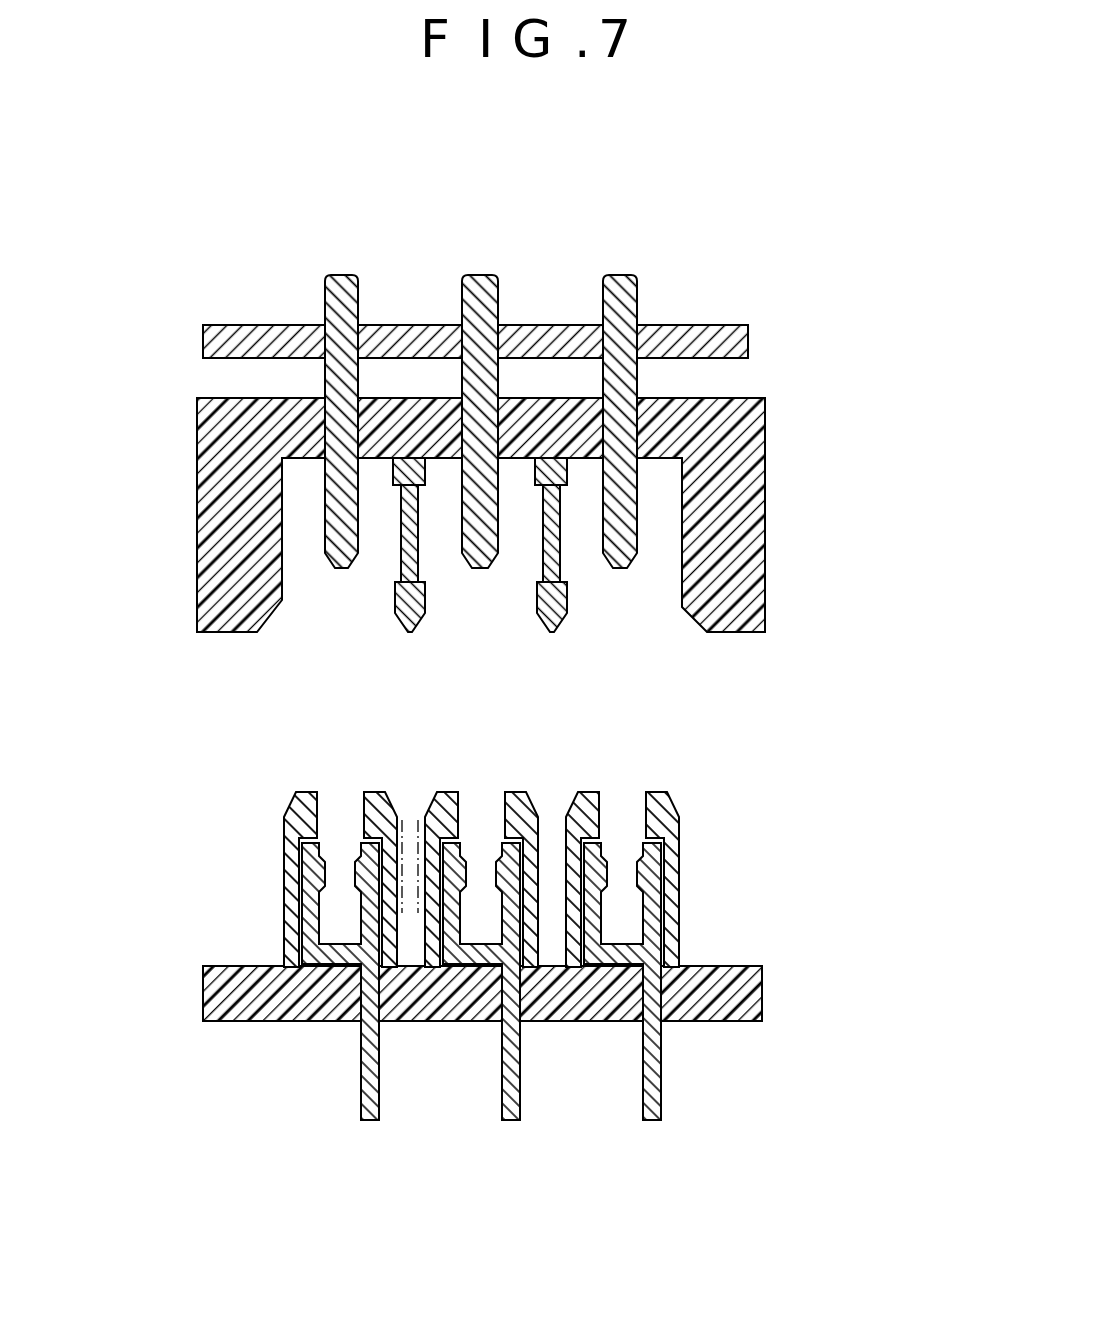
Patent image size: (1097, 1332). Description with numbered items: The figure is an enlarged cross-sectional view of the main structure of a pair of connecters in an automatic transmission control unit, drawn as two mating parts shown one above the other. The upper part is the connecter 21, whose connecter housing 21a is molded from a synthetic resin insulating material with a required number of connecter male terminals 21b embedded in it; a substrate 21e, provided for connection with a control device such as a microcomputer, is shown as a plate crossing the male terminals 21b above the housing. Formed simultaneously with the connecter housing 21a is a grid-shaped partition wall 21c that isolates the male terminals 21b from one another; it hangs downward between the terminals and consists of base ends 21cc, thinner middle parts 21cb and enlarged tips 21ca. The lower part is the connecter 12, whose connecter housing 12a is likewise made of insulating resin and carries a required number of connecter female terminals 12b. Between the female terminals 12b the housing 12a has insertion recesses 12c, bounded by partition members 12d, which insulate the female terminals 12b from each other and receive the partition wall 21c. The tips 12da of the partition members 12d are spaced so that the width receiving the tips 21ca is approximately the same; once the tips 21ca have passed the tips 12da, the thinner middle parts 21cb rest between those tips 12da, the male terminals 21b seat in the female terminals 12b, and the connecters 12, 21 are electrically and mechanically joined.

The connecter 12 is at (517, 995).
The connecter housing 12a is at (734, 1003).
The connecter female terminals 12b is at (328, 965).
The insertion recesses 12c is at (432, 958).
The partition members 12d is at (486, 841).
The tips 12da is at (377, 792).
The connecter 21 is at (500, 446).
The connecter housing 21a is at (762, 415).
The connecter male terminals 21b is at (337, 375).
The grid-shaped partition wall 21c is at (325, 446).
The tips 21ca is at (398, 604).
The middle parts 21cb is at (404, 548).
The base ends 21cc is at (393, 472).
The substrate 21e is at (748, 338).